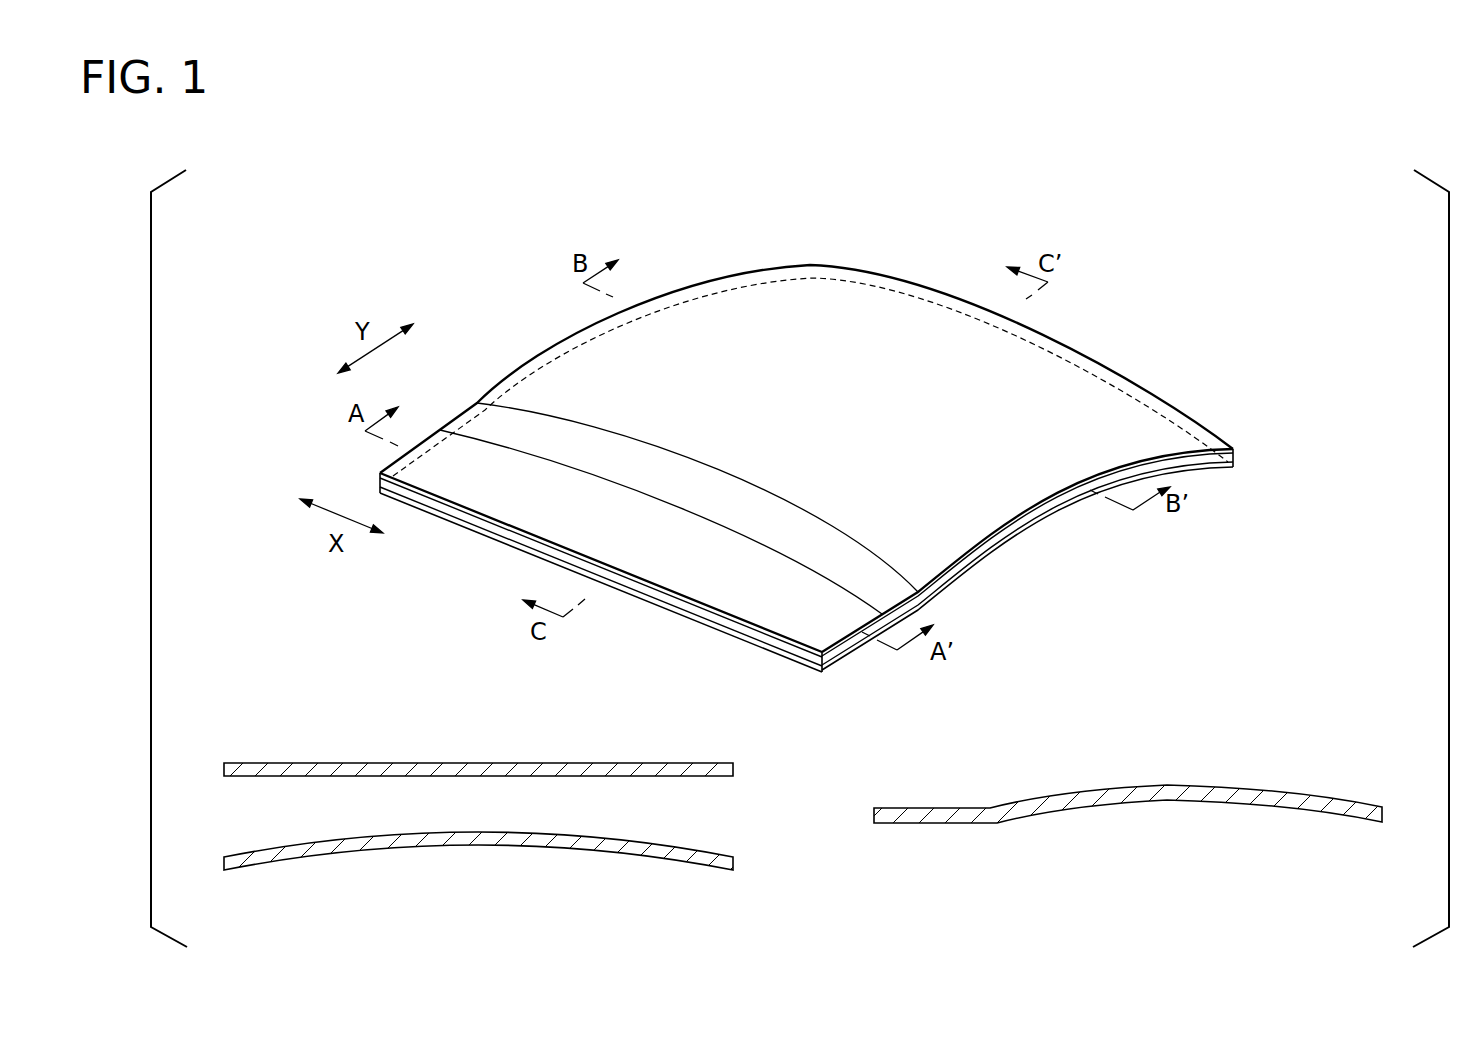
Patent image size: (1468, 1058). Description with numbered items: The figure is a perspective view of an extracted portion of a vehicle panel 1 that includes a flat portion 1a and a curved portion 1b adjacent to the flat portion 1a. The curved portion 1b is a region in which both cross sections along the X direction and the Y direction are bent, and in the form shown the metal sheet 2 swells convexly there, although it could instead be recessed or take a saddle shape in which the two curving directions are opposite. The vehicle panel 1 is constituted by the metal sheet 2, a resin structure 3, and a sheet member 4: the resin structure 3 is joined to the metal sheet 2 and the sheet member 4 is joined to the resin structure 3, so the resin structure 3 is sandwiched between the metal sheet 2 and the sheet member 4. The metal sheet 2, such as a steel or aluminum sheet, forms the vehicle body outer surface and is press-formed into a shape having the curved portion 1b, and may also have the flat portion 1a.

The vehicle panel 1 is at (804, 568).
The flat portion 1a is at (738, 597).
The curved portion 1b is at (888, 357).
The metal sheet 2 is at (1052, 492).
The resin structure 3 is at (1013, 523).
The sheet member 4 is at (995, 547).